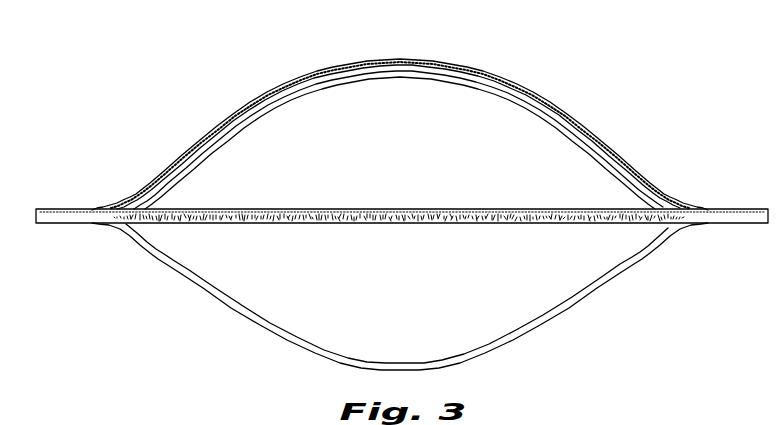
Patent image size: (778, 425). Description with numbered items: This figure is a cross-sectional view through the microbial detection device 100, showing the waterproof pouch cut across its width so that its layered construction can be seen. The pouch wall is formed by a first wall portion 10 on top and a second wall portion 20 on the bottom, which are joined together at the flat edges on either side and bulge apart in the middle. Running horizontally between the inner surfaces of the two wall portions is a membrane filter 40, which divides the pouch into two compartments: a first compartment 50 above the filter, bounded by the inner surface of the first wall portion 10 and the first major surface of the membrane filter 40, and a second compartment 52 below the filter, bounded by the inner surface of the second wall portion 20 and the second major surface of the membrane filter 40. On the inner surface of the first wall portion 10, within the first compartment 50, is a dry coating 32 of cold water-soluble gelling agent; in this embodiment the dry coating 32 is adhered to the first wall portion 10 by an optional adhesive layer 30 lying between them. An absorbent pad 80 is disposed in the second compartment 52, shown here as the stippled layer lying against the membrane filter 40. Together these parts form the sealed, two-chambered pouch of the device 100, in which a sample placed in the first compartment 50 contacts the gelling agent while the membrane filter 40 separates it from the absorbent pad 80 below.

The device 100 is at (621, 98).
The first wall portion 10 is at (452, 63).
The adhesive layer 30 is at (512, 88).
The dry coating 32 is at (347, 83).
The membrane filter 40 is at (421, 209).
The absorbent pad 80 is at (440, 223).
The second wall portion 20 is at (442, 363).
The first compartment 50 is at (494, 181).
The second compartment 52 is at (494, 279).